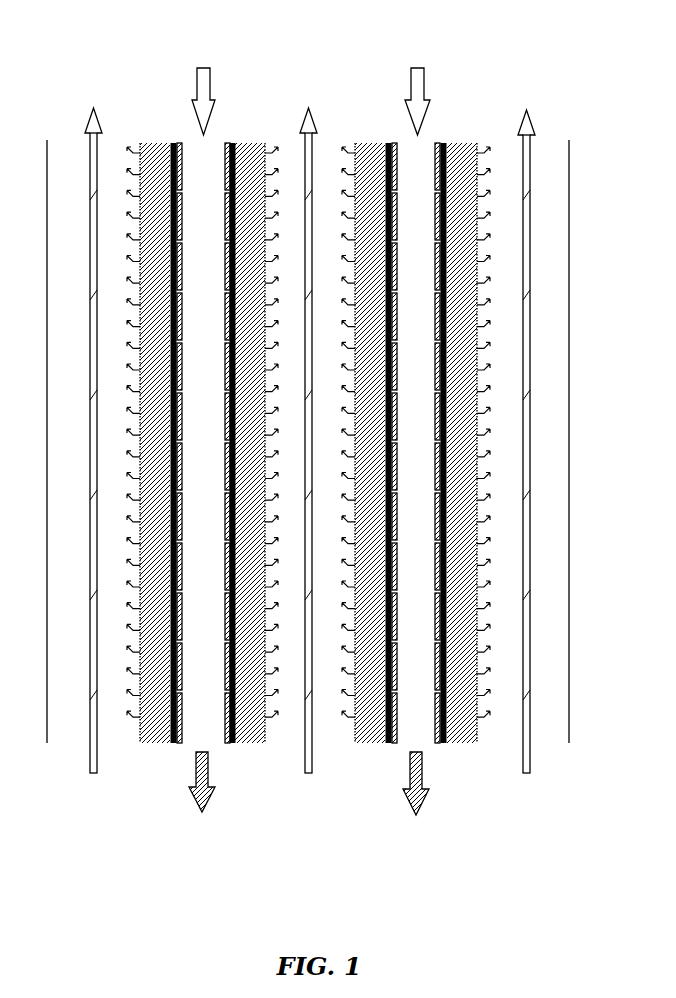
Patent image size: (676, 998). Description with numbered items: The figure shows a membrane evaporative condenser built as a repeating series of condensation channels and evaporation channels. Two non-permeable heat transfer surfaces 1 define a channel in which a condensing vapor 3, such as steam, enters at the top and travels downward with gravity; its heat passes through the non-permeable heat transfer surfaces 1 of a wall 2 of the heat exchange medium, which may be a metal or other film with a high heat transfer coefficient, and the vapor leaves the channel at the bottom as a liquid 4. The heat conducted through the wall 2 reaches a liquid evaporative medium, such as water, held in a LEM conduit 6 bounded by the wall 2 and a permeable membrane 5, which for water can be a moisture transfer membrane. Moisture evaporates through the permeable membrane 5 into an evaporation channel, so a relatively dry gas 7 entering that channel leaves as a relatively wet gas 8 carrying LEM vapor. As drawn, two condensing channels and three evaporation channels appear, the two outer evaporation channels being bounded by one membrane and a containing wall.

The non-permeable heat transfer surface 1 is at (178, 745).
The wall 2 is at (173, 140).
The condensing vapor 3 is at (202, 68).
The liquid 4 is at (202, 813).
The permeable membrane 5 is at (140, 745).
The LEM conduit 6 is at (155, 138).
The dry gas 7 is at (90, 773).
The wet gas 8 is at (93, 108).